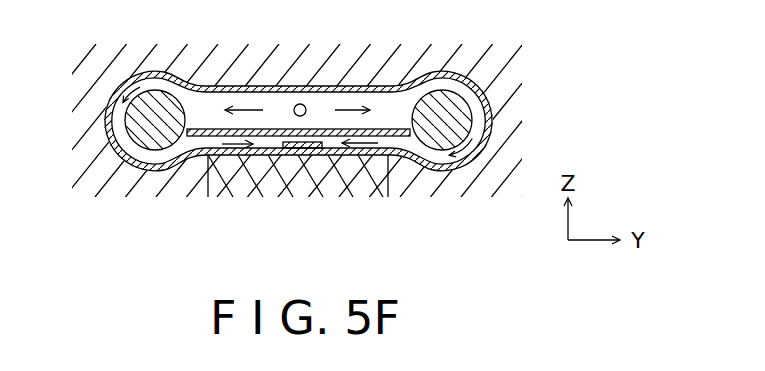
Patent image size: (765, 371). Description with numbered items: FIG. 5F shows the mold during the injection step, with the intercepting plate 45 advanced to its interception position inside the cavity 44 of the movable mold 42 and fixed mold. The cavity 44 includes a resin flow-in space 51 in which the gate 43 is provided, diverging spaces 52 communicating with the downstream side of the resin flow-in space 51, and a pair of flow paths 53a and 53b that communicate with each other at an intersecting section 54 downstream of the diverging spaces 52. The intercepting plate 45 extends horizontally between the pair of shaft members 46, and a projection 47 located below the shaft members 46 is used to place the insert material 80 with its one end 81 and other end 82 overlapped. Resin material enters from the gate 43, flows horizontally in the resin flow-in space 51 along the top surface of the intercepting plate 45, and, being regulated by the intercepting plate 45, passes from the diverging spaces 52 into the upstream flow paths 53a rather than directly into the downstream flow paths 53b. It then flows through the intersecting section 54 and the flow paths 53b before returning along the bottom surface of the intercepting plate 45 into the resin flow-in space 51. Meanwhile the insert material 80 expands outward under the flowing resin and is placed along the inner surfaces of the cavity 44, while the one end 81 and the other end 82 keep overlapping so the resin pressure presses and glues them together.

The movable mold 42 is at (293, 43).
The gate 43 is at (301, 103).
The cavity 44 is at (324, 113).
The intercepting plate 45 is at (183, 152).
The shaft members 46 is at (138, 130).
The projection 47 is at (297, 226).
The resin flow-in space 51 is at (277, 108).
The diverging space 52 is at (403, 123).
The upstream flow paths 53a is at (155, 80).
The downstream flow paths 53b is at (150, 162).
The intersecting section 54 is at (104, 106).
The insert material 80 is at (368, 157).
The one end 81 is at (310, 157).
The other end 82 is at (252, 156).